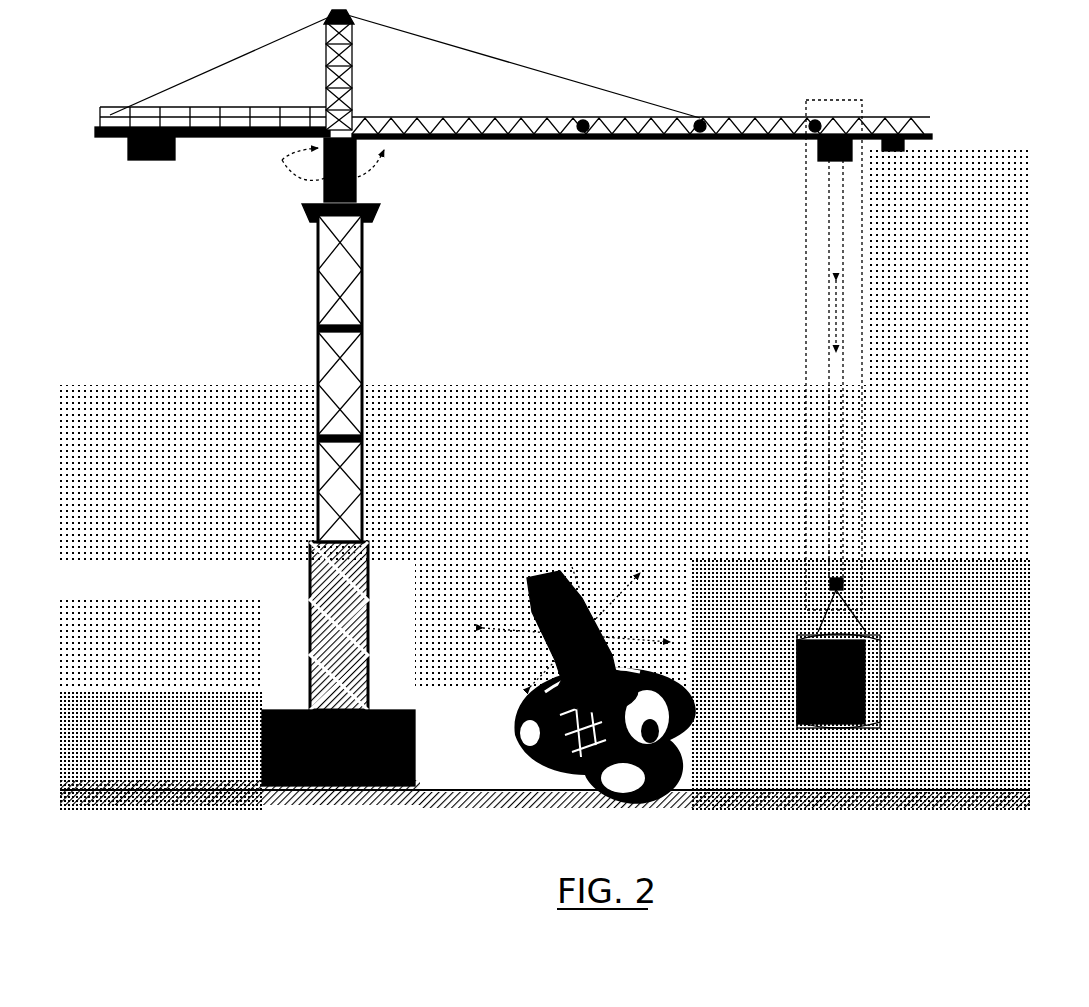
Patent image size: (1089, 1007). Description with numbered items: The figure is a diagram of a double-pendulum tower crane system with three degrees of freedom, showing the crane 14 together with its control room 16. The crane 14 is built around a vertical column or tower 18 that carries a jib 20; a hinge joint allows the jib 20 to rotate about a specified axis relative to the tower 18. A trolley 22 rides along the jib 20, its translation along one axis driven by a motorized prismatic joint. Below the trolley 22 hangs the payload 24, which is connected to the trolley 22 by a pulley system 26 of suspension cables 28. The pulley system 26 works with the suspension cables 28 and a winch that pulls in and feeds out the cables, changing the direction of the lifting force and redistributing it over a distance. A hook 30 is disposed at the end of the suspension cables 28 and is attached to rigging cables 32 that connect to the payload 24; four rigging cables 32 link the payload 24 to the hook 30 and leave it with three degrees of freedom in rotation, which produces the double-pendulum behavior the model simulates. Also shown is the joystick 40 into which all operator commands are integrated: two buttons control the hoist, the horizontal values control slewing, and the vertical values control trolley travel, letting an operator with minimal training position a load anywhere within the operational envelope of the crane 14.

The crane 14 is at (459, 116).
The control room 16 is at (312, 148).
The tower 18 is at (318, 402).
The jib 20 is at (602, 146).
The trolley 22 is at (855, 146).
The payload 24 is at (877, 691).
The pulley system 26 is at (866, 352).
The suspension cables 28 is at (826, 436).
The hook 30 is at (846, 583).
The rigging cables 32 is at (868, 633).
The joystick 40 is at (573, 652).